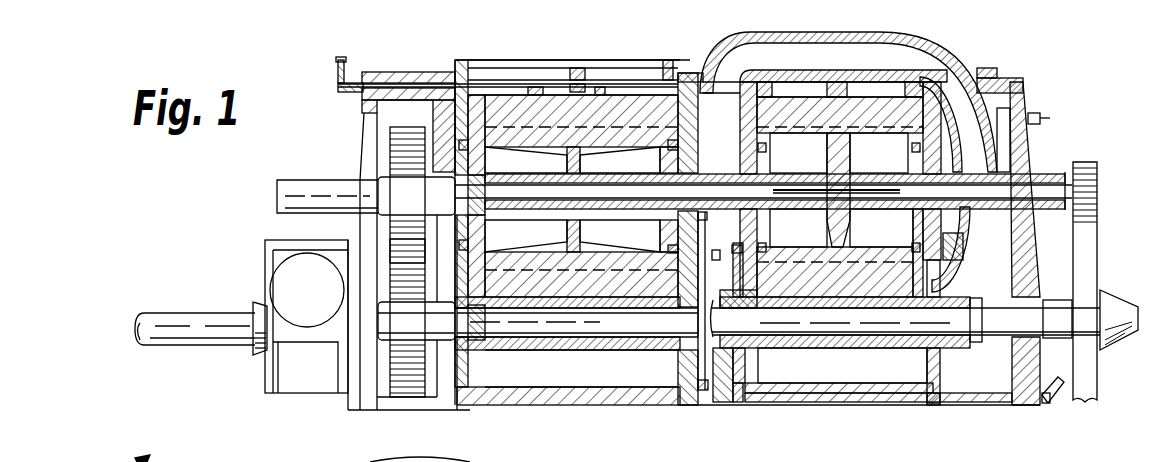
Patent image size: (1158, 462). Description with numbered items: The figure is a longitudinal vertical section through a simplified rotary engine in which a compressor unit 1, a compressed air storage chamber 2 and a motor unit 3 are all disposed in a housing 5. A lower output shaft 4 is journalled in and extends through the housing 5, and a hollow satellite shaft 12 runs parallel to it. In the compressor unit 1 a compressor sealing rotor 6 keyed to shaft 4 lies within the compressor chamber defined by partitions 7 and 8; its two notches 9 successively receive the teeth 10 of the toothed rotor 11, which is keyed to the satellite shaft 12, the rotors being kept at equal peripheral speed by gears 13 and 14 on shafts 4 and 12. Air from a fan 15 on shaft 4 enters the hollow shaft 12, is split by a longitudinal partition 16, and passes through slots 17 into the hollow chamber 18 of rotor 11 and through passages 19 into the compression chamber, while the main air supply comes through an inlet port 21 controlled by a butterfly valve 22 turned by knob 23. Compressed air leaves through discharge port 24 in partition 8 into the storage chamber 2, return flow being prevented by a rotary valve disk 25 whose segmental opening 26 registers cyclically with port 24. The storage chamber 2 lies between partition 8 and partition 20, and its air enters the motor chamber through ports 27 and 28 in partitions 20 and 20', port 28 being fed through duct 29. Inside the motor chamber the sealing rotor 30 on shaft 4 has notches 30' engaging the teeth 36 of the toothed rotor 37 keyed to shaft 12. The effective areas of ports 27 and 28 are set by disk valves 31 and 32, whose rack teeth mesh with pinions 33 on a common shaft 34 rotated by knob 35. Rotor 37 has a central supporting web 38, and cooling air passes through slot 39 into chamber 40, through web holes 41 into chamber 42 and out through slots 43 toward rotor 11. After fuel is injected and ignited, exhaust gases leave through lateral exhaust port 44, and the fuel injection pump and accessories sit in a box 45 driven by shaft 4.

The compressor unit 1 is at (527, 54).
The compressed air storage chamber 2 is at (716, 110).
The motor unit 3 is at (889, 77).
The lower output shaft 4 is at (195, 320).
The housing 5 is at (348, 122).
The compressor sealing rotor 6 is at (497, 338).
The partition 7 is at (440, 110).
The partition 8 is at (700, 145).
The notches 9 is at (577, 342).
The teeth 10 is at (553, 112).
The toothed rotor 11 is at (492, 135).
The satellite shaft 12 is at (300, 180).
The gear 13 is at (405, 383).
The gear 14 is at (400, 133).
The fan 15 is at (1085, 375).
The longitudinally extending partition 16 is at (640, 195).
The slots 17 is at (505, 210).
The hollow chamber 18 is at (652, 152).
The passages 19 is at (592, 148).
The partition 20 is at (730, 189).
The partition 20' is at (945, 171).
The inlet port 21 is at (531, 95).
The butterfly valve 22 is at (497, 84).
The knob 23 is at (338, 62).
The discharge port 24 is at (690, 245).
The rotary valve disk 25 is at (705, 385).
The segmental opening 26 is at (700, 258).
The port 27 is at (745, 270).
The port 28 is at (933, 272).
The duct 29 is at (830, 50).
The sealing rotor 30 is at (906, 342).
The notches 30' is at (790, 360).
The controlling disk valve 31 is at (735, 363).
The controlling disk valve 32 is at (925, 348).
The pinions 33 is at (740, 405).
The common shaft 34 is at (805, 400).
The knob 35 is at (1050, 403).
The teeth 36 is at (885, 100).
The toothed rotor 37 is at (855, 148).
The central supporting web 38 is at (835, 160).
The slot 39 is at (905, 191).
The chamber 40 is at (940, 148).
The web holes 41 is at (828, 140).
The chamber 42 is at (781, 145).
The slots 43 is at (830, 250).
The lateral exhaust port 44 is at (857, 82).
The box 45 is at (298, 378).